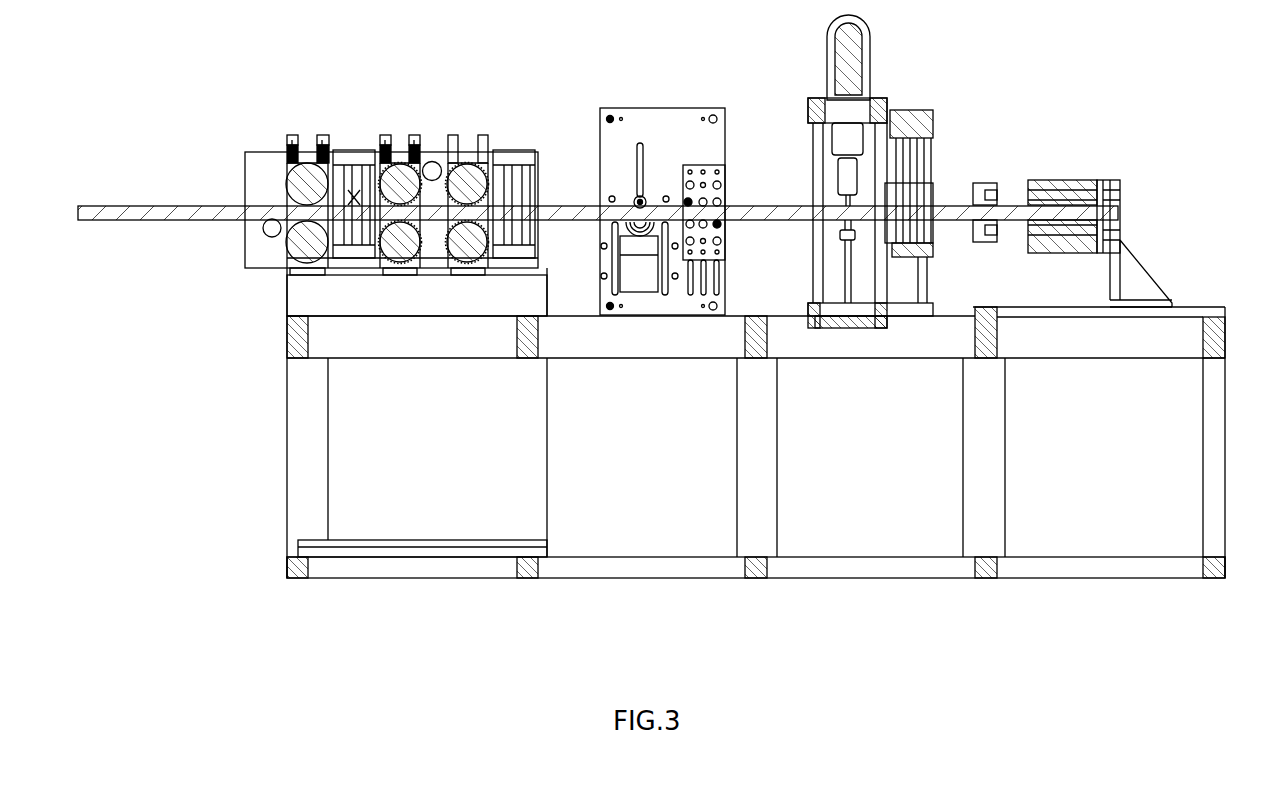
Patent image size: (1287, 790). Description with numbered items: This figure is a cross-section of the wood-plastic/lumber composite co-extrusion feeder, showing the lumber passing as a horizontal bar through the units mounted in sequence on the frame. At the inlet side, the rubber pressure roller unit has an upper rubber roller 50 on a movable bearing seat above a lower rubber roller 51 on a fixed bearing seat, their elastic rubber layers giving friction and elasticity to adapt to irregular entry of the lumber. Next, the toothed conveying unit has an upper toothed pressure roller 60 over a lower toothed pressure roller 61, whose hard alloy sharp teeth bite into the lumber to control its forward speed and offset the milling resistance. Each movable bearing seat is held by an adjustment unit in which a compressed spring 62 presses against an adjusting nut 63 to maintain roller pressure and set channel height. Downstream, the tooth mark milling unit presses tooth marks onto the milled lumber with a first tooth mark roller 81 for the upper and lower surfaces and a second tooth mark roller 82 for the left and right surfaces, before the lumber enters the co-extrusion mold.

The upper rubber roller 50 is at (300, 184).
The lower rubber roller 51 is at (303, 243).
The upper toothed pressure roller 60 is at (400, 178).
The lower toothed pressure roller 61 is at (395, 243).
The compressed spring 62 is at (422, 160).
The adjusting nut 63 is at (412, 152).
The first tooth mark roller 81 is at (717, 200).
The second tooth mark roller 82 is at (923, 168).